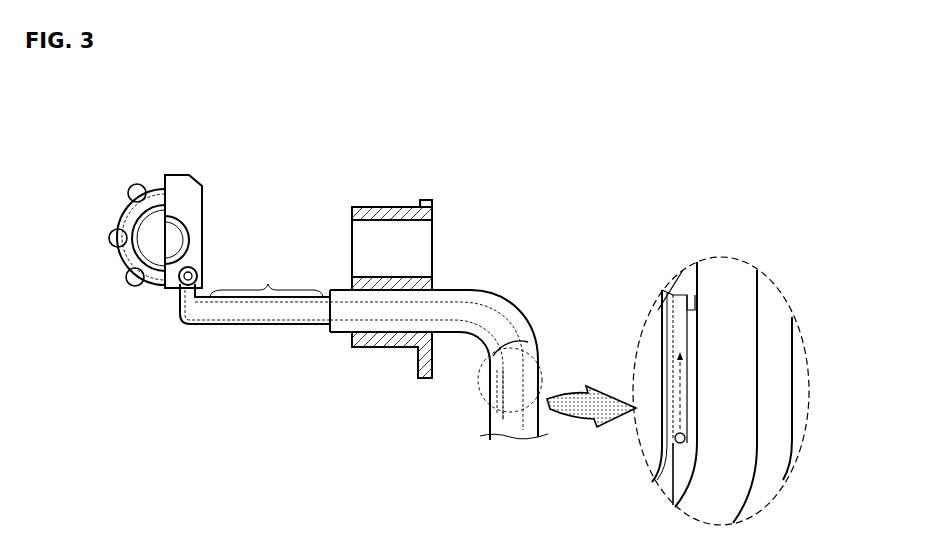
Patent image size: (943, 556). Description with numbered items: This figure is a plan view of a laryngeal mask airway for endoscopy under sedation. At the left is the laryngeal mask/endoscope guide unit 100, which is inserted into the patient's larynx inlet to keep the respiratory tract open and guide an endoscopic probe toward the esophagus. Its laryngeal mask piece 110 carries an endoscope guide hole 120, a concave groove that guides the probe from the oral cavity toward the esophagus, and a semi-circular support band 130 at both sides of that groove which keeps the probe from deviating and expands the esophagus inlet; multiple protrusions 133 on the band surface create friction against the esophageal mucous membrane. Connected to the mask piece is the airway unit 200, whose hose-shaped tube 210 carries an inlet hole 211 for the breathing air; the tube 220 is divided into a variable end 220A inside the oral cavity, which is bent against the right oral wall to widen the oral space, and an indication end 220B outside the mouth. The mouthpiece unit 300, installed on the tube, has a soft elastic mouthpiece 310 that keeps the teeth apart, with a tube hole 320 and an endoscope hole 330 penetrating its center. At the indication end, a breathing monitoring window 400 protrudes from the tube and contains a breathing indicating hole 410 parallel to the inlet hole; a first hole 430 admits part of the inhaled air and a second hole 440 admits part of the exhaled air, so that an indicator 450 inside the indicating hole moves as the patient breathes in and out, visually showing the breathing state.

The laryngeal mask/endoscope guide unit 100 is at (202, 168).
The laryngeal mask piece 110 is at (178, 178).
The endoscope guide hole 120 is at (163, 240).
The support band 130 is at (124, 222).
The protrusions 133 is at (132, 193).
The airway unit 200 is at (171, 336).
The tube 210 is at (280, 325).
The inlet hole 211 is at (205, 318).
The tube 220 is at (663, 468).
The variable end 220A is at (266, 277).
The indication end 220B is at (455, 290).
The mouthpiece unit 300 is at (389, 192).
The mouthpiece 310 is at (385, 347).
The tube hole 320 is at (355, 332).
The endoscope hole 330 is at (363, 235).
The breathing monitoring window 400 is at (645, 335).
The breathing indicating hole 410 is at (672, 289).
The first hole 430 is at (673, 480).
The second hole 440 is at (687, 293).
The indicator 450 is at (675, 440).